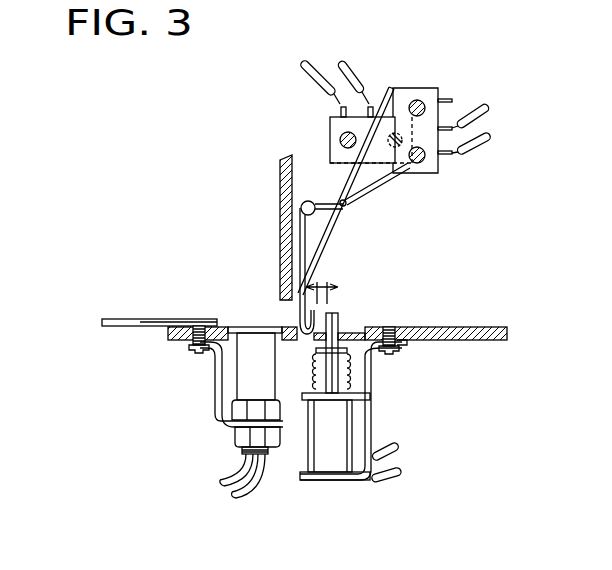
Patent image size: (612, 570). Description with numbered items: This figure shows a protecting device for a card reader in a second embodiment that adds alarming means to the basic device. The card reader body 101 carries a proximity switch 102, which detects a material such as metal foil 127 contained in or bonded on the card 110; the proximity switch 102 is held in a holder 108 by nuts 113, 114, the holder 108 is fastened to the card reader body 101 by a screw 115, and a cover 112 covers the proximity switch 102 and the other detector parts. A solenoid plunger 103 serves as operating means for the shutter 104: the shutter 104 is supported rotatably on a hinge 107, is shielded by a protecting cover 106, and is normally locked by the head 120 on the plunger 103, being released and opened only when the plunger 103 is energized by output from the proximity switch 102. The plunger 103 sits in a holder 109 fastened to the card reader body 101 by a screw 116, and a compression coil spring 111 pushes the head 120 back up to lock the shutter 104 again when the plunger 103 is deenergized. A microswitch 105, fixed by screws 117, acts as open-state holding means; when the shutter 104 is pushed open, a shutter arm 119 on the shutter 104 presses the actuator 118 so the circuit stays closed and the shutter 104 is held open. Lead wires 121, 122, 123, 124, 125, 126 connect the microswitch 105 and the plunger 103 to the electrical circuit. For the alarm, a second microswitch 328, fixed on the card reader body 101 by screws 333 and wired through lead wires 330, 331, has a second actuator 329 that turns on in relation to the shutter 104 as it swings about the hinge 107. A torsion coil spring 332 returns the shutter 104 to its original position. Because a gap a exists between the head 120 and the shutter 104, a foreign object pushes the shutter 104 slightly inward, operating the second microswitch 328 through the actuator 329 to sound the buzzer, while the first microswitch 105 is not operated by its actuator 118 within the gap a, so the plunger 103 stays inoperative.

The card reader body 101 is at (456, 325).
The proximity switch 102 is at (247, 392).
The solenoid plunger 103 is at (329, 455).
The shutter 104 is at (318, 282).
The microswitch 105 is at (376, 176).
The protecting cover 106 is at (281, 172).
The hinge 107 is at (316, 238).
The holder 108 is at (216, 370).
The holder 109 is at (405, 345).
The card 110 is at (128, 319).
The compression coil spring 111 is at (315, 382).
The cover 112 is at (248, 327).
The nut 113 is at (240, 412).
The nut 114 is at (243, 447).
The screw 115 is at (193, 348).
The screw 116 is at (384, 354).
The screws 117 is at (340, 138).
The actuator 118 is at (376, 192).
The shutter arm 119 is at (340, 206).
The head 120 is at (340, 326).
The lead wire 121 is at (305, 60).
The lead wire 122 is at (344, 60).
The lead wire 123 is at (220, 482).
The lead wire 124 is at (234, 496).
The lead wire 125 is at (400, 473).
The lead wire 126 is at (397, 446).
The metal foil 127 is at (170, 319).
The second microswitch 328 is at (440, 100).
The second actuator 329 is at (386, 88).
The lead wire 330 is at (486, 110).
The lead wire 331 is at (488, 140).
The torsion coil spring 332 is at (300, 206).
The screws 333 is at (418, 100).
The gap a is at (330, 306).